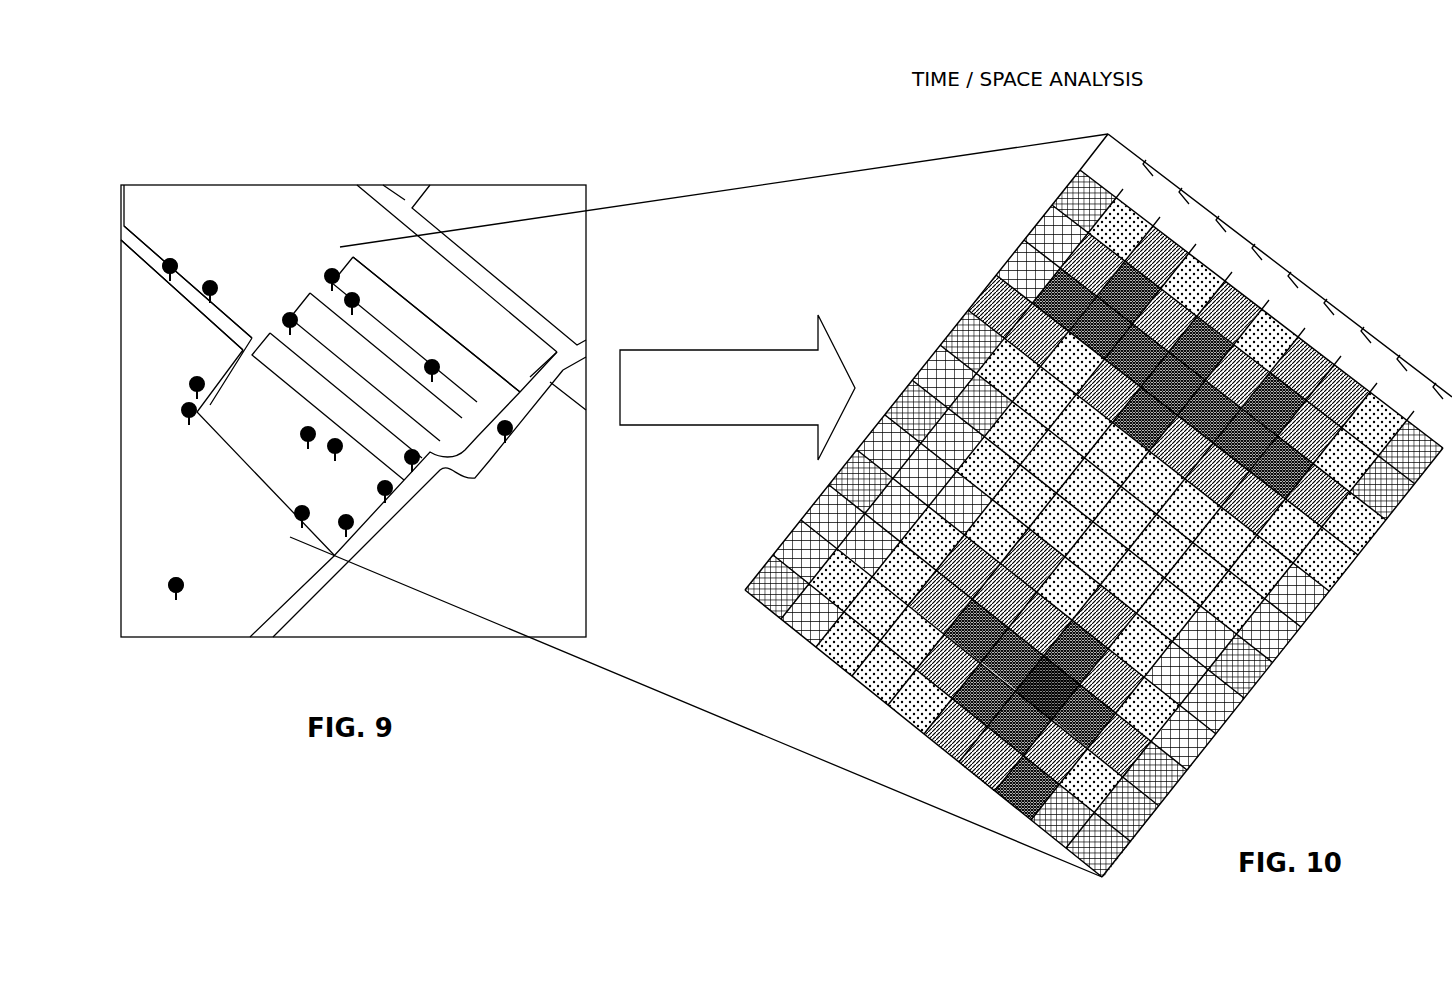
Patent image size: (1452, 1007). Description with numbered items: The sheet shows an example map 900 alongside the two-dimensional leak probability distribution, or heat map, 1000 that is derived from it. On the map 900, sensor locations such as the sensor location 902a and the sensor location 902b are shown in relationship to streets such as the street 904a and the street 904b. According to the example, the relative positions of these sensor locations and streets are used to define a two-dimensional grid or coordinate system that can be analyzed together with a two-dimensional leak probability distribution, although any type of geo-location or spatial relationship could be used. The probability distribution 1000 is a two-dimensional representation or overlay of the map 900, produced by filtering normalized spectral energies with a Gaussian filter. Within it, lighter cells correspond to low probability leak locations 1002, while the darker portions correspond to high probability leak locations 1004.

In FIG. 9, the map 900 is at (584, 152).
In FIG. 9, the sensor location 902a is at (250, 336).
In FIG. 9, the sensor location 902b is at (448, 330).
In FIG. 9, the street 904a is at (166, 262).
In FIG. 9, the street 904b is at (178, 596).
In FIG. 10, the leak probability distribution 1000 is at (1316, 182).
In FIG. 10, the low probability leak location 1002 is at (1296, 305).
In FIG. 10, the high probability leak location 1004 is at (1062, 695).